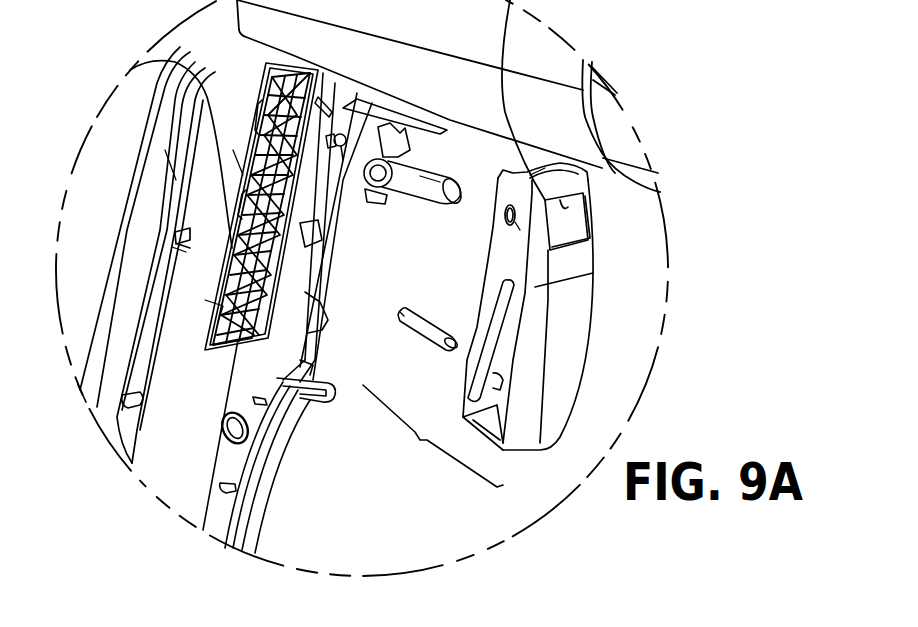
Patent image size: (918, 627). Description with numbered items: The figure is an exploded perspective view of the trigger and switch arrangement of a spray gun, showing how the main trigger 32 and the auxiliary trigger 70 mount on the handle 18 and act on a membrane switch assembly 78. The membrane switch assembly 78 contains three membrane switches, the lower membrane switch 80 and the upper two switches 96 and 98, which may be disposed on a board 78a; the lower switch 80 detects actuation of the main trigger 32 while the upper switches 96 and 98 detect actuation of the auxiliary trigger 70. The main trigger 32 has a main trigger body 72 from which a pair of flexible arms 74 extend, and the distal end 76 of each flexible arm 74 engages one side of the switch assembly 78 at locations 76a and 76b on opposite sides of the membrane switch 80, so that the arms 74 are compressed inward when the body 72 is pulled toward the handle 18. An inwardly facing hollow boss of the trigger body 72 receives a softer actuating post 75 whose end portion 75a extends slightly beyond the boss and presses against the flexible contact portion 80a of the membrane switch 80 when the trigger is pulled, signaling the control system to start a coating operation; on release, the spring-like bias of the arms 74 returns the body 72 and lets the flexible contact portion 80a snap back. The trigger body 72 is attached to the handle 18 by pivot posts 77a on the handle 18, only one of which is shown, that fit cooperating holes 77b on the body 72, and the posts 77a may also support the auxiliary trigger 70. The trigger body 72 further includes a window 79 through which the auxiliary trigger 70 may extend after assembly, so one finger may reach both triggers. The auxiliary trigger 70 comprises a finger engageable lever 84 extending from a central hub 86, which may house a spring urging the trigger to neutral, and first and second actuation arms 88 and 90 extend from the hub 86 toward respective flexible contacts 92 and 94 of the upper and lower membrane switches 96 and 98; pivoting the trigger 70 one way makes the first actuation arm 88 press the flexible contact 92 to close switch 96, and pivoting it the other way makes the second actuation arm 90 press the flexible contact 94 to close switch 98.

The handle 18 is at (247, 507).
The main trigger 32 is at (433, 436).
The auxiliary trigger 70 is at (407, 218).
The main trigger body 72 is at (560, 350).
The flexible arms 74 is at (485, 308).
The actuating post 75 is at (418, 333).
The end portion 75a is at (400, 312).
The distal end 76 is at (458, 390).
The location 76a is at (215, 272).
The location 76b is at (270, 290).
The pivot posts 77a is at (350, 108).
The holes 77b is at (507, 190).
The membrane switch assembly 78 is at (190, 307).
The board 78a is at (232, 192).
The window 79 is at (553, 237).
The membrane switch 80 is at (212, 312).
The flexible contact portion 80a is at (290, 374).
The finger engageable lever 84 is at (433, 192).
The central hub 86 is at (420, 150).
The first actuation arm 88 is at (402, 120).
The second actuation arm 90 is at (370, 202).
The flexible contact 92 is at (303, 70).
The flexible contact 94 is at (288, 165).
The upper membrane switch 96 is at (255, 85).
The lower membrane switch 98 is at (235, 152).